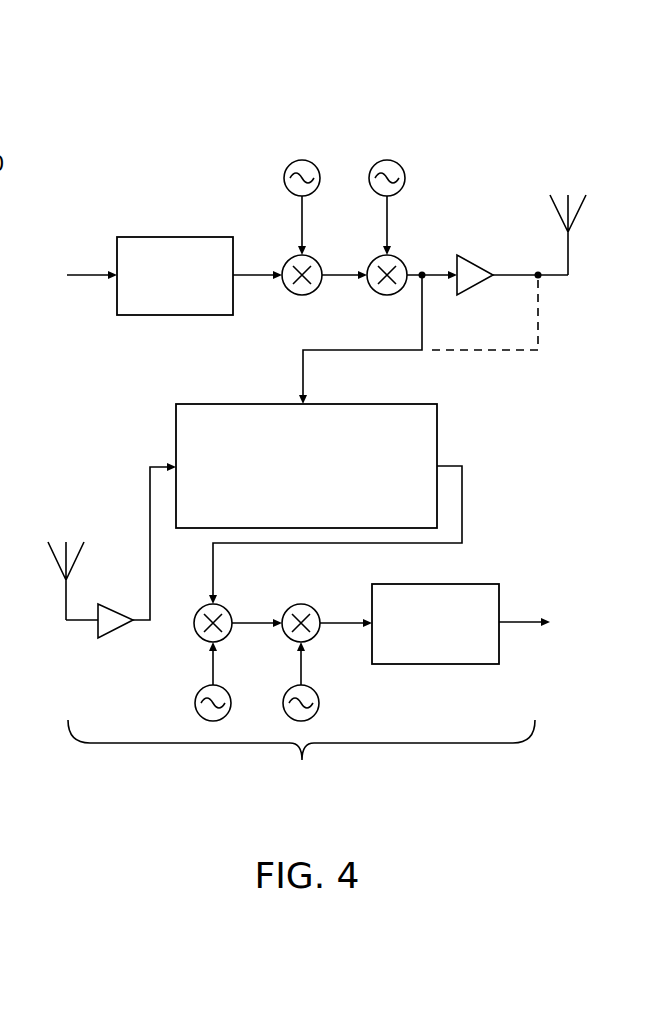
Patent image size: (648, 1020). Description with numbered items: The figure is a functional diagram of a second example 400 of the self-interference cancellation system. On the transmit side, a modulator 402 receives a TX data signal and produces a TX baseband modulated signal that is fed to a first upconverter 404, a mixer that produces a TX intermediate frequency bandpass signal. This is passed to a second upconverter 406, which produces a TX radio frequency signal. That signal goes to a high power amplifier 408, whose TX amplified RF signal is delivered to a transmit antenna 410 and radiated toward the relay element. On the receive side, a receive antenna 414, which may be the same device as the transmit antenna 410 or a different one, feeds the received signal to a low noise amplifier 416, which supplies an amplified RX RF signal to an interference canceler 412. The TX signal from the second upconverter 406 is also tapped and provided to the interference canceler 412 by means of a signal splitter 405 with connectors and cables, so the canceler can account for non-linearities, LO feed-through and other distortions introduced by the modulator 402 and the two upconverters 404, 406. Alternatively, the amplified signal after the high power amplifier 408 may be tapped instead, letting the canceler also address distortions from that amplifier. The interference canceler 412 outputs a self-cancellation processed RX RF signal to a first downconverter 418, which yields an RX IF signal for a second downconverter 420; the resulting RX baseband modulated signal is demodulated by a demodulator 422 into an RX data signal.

The second example of the self-interference cancellation system 400 is at (360, 98).
The modulator 402 is at (137, 237).
The first upconverter 404 is at (297, 292).
The signal splitter 405 is at (422, 268).
The second upconverter 406 is at (388, 296).
The high power amplifier 408 is at (463, 255).
The transmit antenna 410 is at (585, 203).
The interference canceler 412 is at (437, 438).
The receive antenna 414 is at (48, 552).
The low noise amplifier 416 is at (98, 627).
The first downconverter 418 is at (230, 610).
The second downconverter 420 is at (318, 610).
The demodulator 422 is at (460, 584).